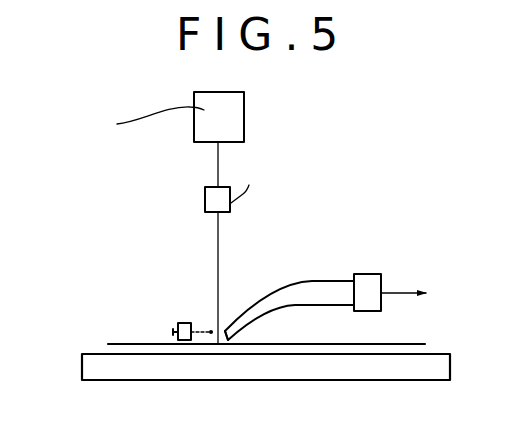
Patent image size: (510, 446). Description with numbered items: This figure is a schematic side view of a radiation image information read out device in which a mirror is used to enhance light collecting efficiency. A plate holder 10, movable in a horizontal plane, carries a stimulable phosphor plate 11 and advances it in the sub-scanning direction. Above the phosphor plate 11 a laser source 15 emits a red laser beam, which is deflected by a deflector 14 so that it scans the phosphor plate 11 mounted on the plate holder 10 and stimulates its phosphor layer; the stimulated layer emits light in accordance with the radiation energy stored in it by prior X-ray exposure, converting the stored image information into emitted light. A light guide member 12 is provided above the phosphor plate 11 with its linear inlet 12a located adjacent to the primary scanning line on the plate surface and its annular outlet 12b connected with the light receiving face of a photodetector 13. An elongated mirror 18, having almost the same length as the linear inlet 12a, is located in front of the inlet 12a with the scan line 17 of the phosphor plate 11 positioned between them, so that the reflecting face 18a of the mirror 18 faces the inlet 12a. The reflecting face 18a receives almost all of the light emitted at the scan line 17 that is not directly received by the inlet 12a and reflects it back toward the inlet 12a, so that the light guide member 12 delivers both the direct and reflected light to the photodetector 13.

The plate holder 10 is at (88, 366).
The stimulable phosphor plate 11 is at (120, 343).
The light guide member 12 is at (302, 284).
The linear inlet 12a is at (232, 340).
The annular outlet 12b is at (351, 286).
The photodetector 13 is at (370, 290).
The deflector 14 is at (205, 199).
The laser source 15 is at (237, 122).
The scan line 17 is at (218, 345).
The elongated mirror 18 is at (210, 331).
The reflecting face 18a is at (216, 345).